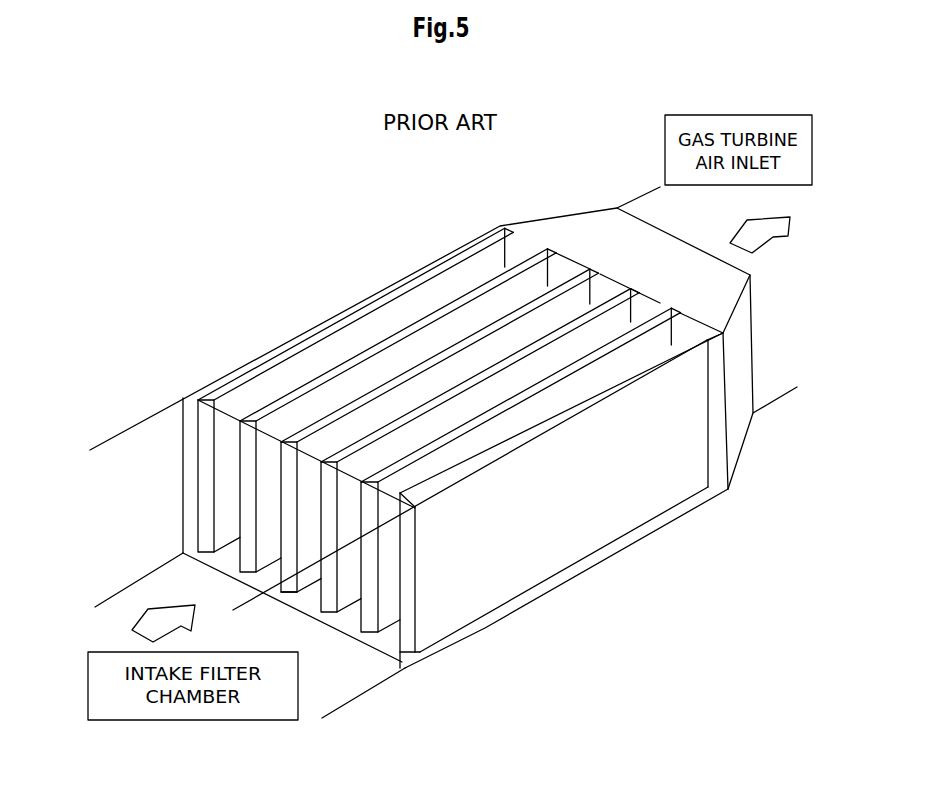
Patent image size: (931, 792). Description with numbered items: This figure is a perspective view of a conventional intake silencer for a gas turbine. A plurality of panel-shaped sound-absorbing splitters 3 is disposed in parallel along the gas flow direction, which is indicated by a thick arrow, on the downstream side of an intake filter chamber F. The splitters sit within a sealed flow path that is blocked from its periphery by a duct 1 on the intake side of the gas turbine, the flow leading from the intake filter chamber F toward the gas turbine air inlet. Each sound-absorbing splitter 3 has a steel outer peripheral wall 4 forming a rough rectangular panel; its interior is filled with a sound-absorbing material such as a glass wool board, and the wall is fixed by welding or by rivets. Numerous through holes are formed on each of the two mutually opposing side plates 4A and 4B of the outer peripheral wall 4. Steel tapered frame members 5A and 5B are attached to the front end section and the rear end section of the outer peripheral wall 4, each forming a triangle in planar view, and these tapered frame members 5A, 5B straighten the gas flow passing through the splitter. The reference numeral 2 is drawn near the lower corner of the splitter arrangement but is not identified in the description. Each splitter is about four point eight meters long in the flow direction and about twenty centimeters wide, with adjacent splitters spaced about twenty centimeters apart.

The duct 1 is at (143, 418).
The duct floor edge 2 is at (402, 662).
The sound-absorbing splitter 3 is at (410, 328).
The outer peripheral wall 4 is at (542, 567).
The side plate 4A is at (642, 307).
The side plate 4B is at (662, 333).
The tapered frame member 5A is at (580, 268).
The tapered frame member 5B is at (278, 572).
The intake filter chamber F is at (347, 693).